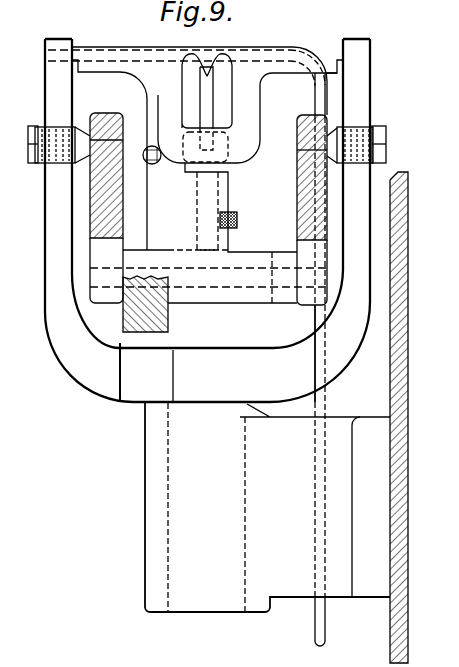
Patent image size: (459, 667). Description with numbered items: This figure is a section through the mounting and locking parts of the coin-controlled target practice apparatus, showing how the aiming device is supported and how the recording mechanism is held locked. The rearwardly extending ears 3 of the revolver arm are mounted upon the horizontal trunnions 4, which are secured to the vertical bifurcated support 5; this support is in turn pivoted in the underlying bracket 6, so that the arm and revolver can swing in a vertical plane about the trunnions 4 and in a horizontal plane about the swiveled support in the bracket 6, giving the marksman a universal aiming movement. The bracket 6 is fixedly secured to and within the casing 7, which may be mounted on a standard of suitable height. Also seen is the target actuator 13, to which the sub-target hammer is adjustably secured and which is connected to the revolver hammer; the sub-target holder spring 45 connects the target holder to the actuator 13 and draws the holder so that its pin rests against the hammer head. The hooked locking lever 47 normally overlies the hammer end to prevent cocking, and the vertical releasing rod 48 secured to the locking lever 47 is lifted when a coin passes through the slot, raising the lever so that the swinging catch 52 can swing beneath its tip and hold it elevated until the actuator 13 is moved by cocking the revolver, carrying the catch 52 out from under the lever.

The ears 3 is at (131, 108).
The horizontal trunnions 4 is at (34, 135).
The vertical bifurcated support 5 is at (68, 374).
The bracket 6 is at (150, 507).
The casing 7 is at (410, 488).
The target actuator 13 is at (212, 300).
The sub-target holder spring 45 is at (156, 165).
The hooked locking lever 47 is at (208, 70).
The vertical releasing rod 48 is at (318, 86).
The swinging catch 52 is at (252, 117).